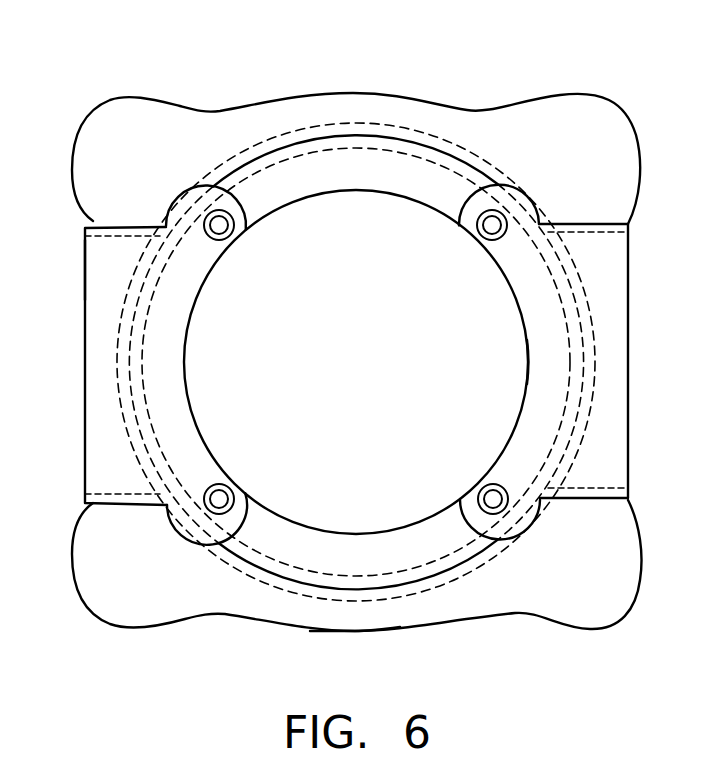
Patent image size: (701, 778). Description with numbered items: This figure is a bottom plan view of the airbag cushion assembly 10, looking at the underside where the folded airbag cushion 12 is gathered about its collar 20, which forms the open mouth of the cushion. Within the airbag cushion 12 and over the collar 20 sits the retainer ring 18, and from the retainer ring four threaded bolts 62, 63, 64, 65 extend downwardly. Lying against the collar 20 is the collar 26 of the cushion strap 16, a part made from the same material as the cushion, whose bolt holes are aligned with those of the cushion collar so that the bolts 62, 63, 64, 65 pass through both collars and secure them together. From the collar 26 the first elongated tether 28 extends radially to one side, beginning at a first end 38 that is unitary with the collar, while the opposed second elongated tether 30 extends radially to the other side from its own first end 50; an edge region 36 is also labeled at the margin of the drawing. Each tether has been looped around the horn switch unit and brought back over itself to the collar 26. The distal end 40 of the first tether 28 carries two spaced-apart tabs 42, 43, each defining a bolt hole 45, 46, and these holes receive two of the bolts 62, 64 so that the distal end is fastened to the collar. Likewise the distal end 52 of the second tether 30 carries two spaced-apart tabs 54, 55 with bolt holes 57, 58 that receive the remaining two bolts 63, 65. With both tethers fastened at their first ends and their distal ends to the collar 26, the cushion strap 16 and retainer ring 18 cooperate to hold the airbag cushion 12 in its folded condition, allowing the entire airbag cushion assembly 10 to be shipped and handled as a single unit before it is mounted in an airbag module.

The airbag cushion assembly 10 is at (343, 337).
The airbag cushion 12 is at (463, 104).
The cushion strap 16 is at (549, 188).
The retainer ring 18 is at (371, 634).
The collar 20 is at (352, 143).
The collar 26 is at (453, 152).
The first elongated strap or tether 28 is at (85, 340).
The second elongated strap or tether 30 is at (628, 350).
The flange edge 36 is at (42, 250).
The first end 38 is at (120, 224).
The distal end 40 is at (187, 355).
The tab 42 is at (240, 212).
The tab 43 is at (247, 506).
The bolt hole 45 is at (219, 238).
The bolt hole 46 is at (219, 490).
The first end 50 is at (573, 492).
The distal end 52 is at (527, 357).
The tab 54 is at (460, 212).
The tab 55 is at (468, 496).
The bolt hole 57 is at (492, 247).
The bolt hole 58 is at (489, 485).
The threaded bolt 62 is at (232, 238).
The threaded bolt 63 is at (474, 237).
The threaded bolt 64 is at (228, 489).
The threaded bolt 65 is at (482, 484).